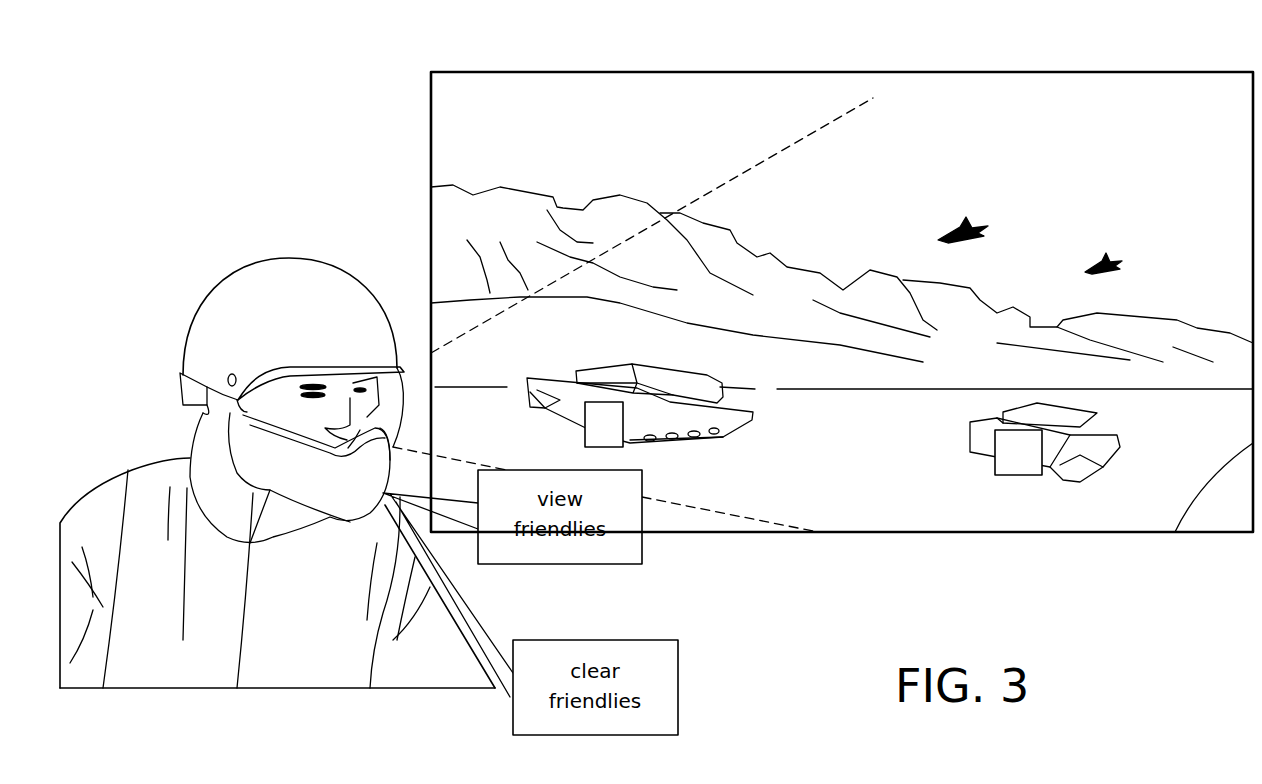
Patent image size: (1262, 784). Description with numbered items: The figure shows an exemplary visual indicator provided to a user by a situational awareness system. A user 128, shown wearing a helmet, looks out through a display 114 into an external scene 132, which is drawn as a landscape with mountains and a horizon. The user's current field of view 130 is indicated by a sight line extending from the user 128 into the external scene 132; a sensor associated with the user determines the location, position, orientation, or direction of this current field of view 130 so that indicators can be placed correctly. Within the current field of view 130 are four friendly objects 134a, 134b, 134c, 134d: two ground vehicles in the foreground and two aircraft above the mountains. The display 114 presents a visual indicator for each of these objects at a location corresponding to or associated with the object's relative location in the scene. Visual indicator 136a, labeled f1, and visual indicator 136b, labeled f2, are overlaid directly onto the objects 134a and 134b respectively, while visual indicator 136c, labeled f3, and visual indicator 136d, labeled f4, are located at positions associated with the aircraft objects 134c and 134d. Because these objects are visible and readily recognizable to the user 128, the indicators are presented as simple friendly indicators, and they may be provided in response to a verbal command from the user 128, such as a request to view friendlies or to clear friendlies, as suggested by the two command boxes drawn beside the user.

The display 114 is at (408, 368).
The user 128 is at (232, 270).
The current field of view 130 is at (718, 187).
The external scene 132 is at (630, 71).
The friendly object 134a is at (663, 372).
The friendly object 134b is at (1122, 452).
The friendly object 134c is at (1108, 272).
The friendly object 134d is at (965, 237).
The visual indicator 136a is at (650, 447).
The visual indicator 136b is at (988, 455).
The visual indicator 136c is at (1103, 215).
The visual indicator 136d is at (945, 172).